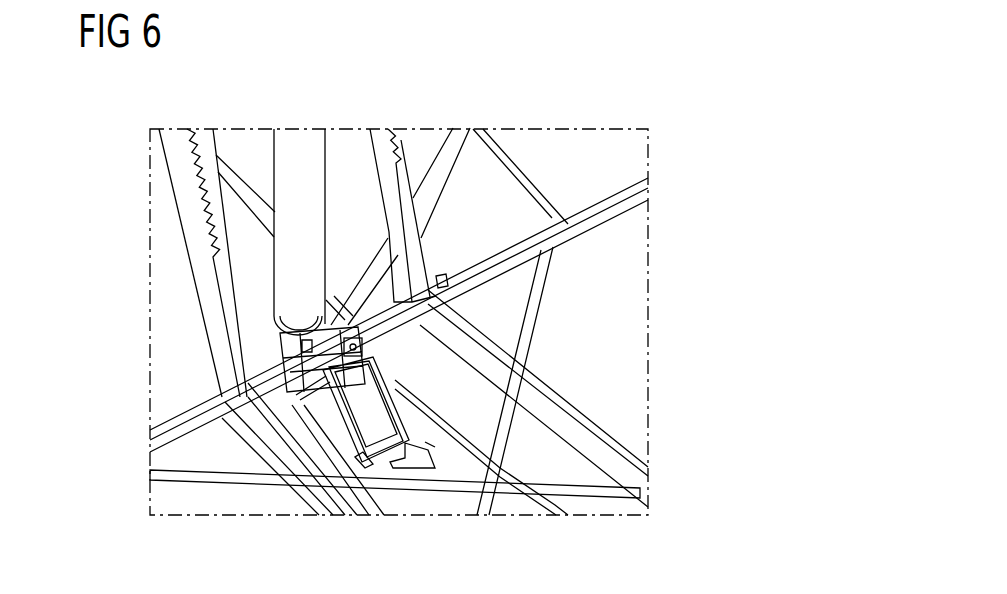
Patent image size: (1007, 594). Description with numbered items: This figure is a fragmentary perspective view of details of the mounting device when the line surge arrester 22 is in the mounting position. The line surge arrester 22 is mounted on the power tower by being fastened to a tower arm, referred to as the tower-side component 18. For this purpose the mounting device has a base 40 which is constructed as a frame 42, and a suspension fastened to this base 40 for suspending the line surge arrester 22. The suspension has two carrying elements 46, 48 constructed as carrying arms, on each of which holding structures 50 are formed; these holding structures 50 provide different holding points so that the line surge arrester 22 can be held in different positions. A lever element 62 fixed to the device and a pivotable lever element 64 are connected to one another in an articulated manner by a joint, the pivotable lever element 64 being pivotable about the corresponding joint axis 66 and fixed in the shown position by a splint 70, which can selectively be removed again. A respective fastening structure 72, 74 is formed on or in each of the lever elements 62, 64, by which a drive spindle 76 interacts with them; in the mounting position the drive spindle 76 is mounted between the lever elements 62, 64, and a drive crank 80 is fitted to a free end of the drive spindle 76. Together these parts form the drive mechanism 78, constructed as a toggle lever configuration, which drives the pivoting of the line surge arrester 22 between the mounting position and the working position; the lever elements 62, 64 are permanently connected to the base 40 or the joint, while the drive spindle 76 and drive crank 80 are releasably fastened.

The tower-side component 18 is at (607, 203).
The line surge arrester 22 is at (298, 142).
The base 40 is at (454, 492).
The frame 42 is at (640, 488).
The carrying element 46 is at (173, 143).
The carrying element 48 is at (377, 143).
The holding structure 50 is at (205, 182).
The lever element 62 is at (400, 421).
The pivotable lever element 64 is at (285, 346).
The joint axis 66 is at (272, 412).
The splint 70 is at (343, 344).
The fastening structure 72 is at (370, 456).
The fastening structure 74 is at (270, 339).
The drive spindle 76 is at (324, 390).
The drive mechanism 78 is at (429, 444).
The drive crank 80 is at (430, 449).